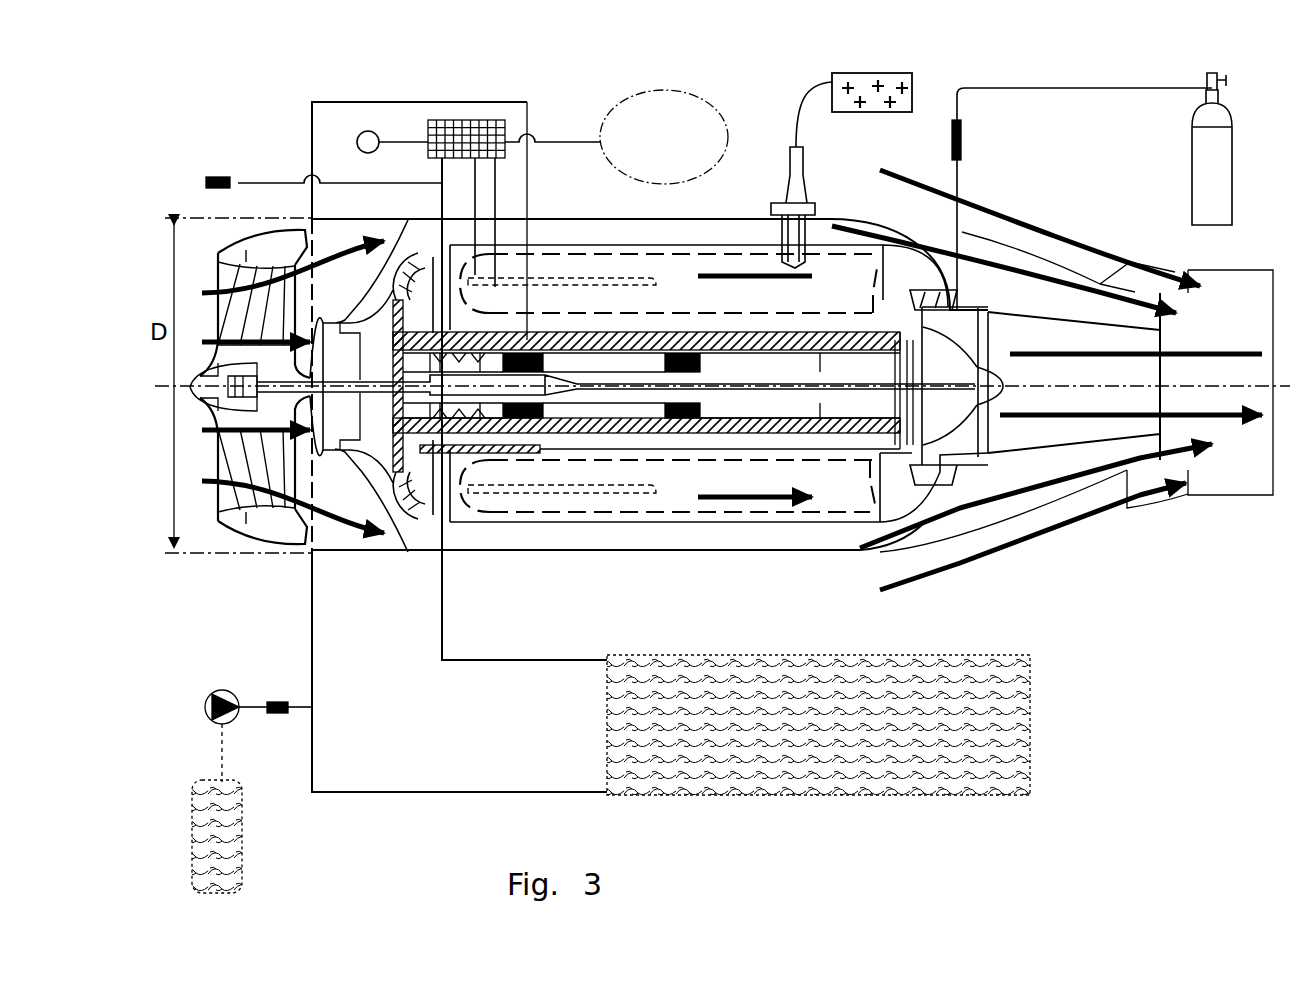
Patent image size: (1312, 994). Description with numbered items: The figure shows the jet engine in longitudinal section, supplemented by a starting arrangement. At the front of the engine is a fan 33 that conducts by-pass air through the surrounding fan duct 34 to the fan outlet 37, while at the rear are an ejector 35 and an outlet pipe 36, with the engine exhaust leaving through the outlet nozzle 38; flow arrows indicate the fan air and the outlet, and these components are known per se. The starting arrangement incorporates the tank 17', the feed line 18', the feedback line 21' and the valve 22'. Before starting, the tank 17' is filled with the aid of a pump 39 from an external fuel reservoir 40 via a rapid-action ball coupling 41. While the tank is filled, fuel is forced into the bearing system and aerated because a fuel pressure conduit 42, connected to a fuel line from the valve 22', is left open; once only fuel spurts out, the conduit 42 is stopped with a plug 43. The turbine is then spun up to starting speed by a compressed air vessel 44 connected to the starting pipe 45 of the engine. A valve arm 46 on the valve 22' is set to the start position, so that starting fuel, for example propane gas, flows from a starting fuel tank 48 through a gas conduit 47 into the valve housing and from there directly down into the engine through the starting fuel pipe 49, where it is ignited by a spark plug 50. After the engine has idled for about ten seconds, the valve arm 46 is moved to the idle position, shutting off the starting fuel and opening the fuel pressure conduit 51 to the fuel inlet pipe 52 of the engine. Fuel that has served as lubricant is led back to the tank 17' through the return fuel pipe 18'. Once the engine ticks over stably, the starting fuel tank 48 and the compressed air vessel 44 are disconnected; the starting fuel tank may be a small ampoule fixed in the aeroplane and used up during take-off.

The tank 17' is at (818, 692).
The feed line 18' is at (459, 447).
The feedback line 21' is at (524, 409).
The valve 22' is at (433, 134).
The fan 33 is at (273, 452).
The fan duct 34 is at (552, 542).
The ejector 35 is at (1124, 514).
The outlet pipe 36 is at (1240, 474).
The fan outlet 37 is at (1170, 306).
The outlet nozzle 38 is at (1172, 376).
The pump 39 is at (222, 686).
The external fuel reservoir 40 is at (262, 858).
The rapid-action ball coupling 41 is at (272, 682).
The fuel pressure conduit 42 is at (254, 188).
The plug 43 is at (207, 168).
The compressed air vessel 44 is at (1166, 157).
The starting pipe 45 is at (968, 180).
The valve arm 46 is at (336, 142).
The gas conduit 47 is at (551, 130).
The starting fuel tank 48 is at (706, 117).
The starting fuel pipe 49 is at (508, 185).
The spark plug 50 is at (812, 153).
The fuel pressure conduit 51 is at (436, 203).
The fuel inlet pipe 52 is at (488, 203).